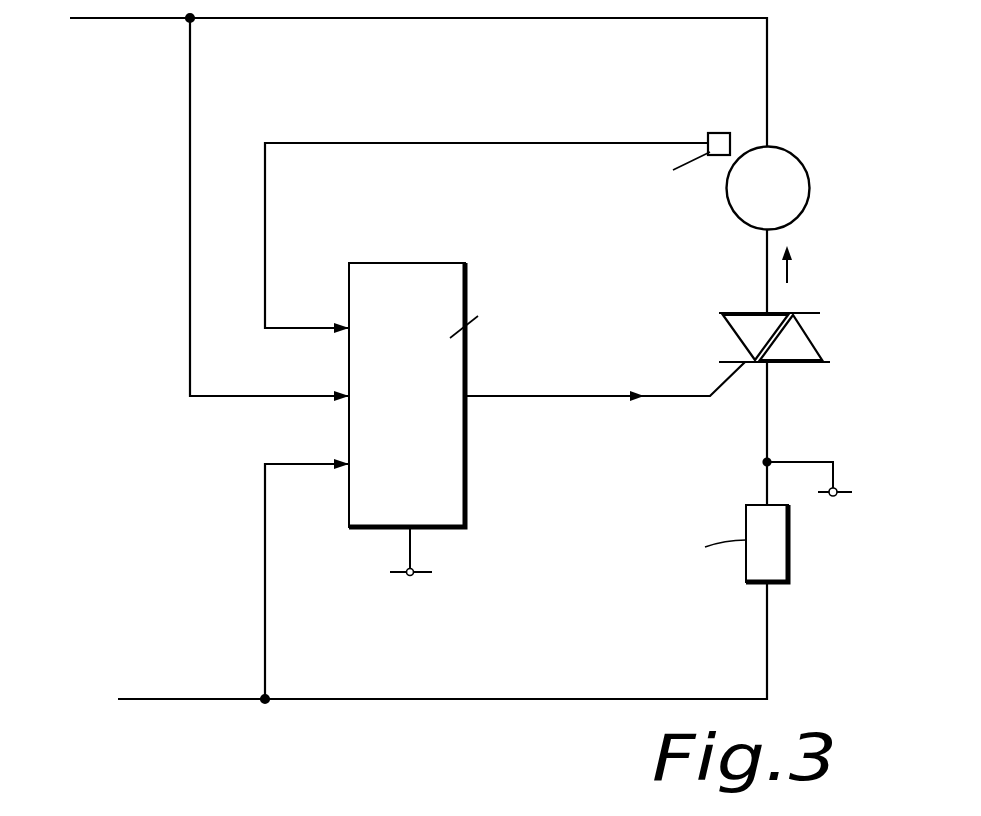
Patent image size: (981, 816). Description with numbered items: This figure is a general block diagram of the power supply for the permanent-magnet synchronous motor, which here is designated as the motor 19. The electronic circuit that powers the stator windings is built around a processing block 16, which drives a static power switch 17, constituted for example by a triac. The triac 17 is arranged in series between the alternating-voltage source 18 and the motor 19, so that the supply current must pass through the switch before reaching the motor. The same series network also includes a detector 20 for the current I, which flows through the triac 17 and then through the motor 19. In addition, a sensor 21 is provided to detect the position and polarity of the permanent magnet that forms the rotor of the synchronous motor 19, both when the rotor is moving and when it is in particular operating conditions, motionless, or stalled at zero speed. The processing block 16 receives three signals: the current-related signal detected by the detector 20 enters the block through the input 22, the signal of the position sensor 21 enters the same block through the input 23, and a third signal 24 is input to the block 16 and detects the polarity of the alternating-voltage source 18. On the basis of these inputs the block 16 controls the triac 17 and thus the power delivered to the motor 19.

The processing block 16 is at (448, 490).
The static power switch 17 is at (748, 380).
The alternating-voltage source 18 is at (833, 497).
The permanent-magnet synchronous motor 19 is at (800, 150).
The current detector 20 is at (752, 575).
The position sensor 21 is at (720, 135).
The current signal input 22 is at (307, 561).
The position sensor signal input 23 is at (486, 238).
The alternating-voltage source polarity signal 24 is at (269, 209).